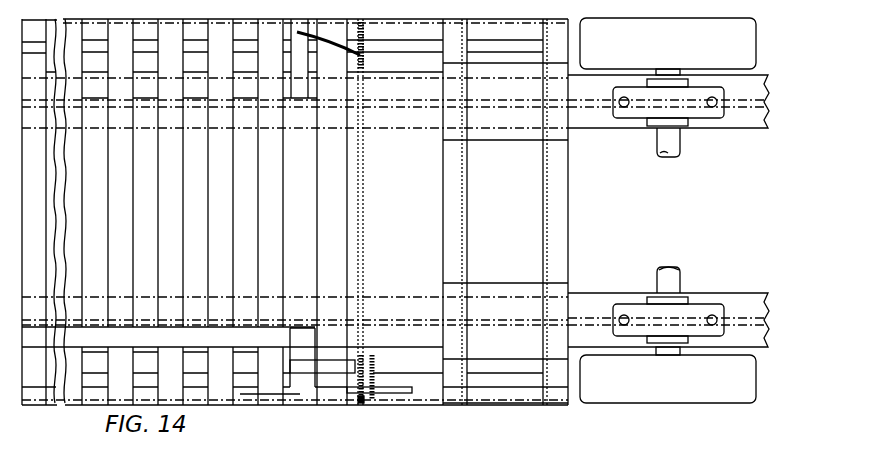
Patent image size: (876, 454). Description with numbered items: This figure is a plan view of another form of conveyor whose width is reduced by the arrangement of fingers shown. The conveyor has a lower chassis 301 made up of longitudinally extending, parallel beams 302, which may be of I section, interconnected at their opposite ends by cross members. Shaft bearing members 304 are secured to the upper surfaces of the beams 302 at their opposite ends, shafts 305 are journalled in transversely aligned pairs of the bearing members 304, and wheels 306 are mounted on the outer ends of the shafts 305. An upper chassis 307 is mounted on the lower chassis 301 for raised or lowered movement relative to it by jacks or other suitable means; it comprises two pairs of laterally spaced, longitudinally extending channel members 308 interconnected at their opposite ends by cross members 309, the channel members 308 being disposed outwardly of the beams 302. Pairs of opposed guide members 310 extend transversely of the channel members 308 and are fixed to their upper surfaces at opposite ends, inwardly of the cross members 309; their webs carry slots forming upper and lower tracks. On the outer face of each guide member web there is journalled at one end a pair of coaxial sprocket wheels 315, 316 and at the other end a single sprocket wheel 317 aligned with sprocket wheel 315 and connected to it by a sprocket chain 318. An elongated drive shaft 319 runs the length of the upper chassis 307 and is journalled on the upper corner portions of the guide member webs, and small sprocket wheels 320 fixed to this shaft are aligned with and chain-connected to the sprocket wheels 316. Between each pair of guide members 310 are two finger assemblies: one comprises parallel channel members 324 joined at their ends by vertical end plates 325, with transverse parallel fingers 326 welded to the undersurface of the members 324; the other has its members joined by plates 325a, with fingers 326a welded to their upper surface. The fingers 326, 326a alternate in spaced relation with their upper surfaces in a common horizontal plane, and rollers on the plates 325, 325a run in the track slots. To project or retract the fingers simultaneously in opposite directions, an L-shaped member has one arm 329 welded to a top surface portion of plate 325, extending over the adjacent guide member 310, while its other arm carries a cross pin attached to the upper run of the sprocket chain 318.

The lower chassis 301 is at (604, 291).
The beam 302 is at (750, 119).
The shaft bearing member 304 is at (700, 112).
The shaft 305 is at (660, 143).
The wheel 306 is at (745, 45).
The upper chassis 307 is at (512, 409).
The channel member 308 is at (522, 394).
The cross member 309 is at (469, 233).
The guide member 310 is at (340, 223).
The sprocket wheel 315 is at (360, 405).
The sprocket wheel 316 is at (371, 405).
The sprocket wheel 317 is at (365, 29).
The sprocket chain 318 is at (365, 229).
The drive shaft 319 is at (399, 395).
The small sprocket wheel 320 is at (375, 388).
The channel member 324 is at (85, 407).
The end plate 325 is at (297, 406).
The end plate 325a is at (363, 59).
The finger 326 is at (178, 220).
The finger 326a is at (226, 228).
The arm 329 is at (322, 366).